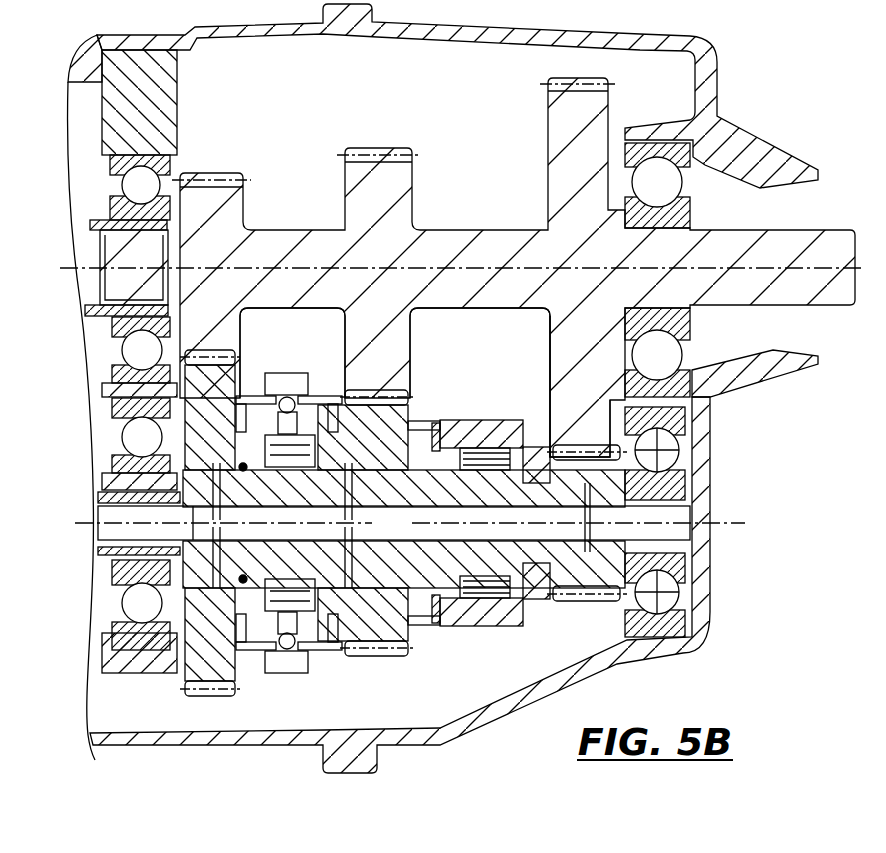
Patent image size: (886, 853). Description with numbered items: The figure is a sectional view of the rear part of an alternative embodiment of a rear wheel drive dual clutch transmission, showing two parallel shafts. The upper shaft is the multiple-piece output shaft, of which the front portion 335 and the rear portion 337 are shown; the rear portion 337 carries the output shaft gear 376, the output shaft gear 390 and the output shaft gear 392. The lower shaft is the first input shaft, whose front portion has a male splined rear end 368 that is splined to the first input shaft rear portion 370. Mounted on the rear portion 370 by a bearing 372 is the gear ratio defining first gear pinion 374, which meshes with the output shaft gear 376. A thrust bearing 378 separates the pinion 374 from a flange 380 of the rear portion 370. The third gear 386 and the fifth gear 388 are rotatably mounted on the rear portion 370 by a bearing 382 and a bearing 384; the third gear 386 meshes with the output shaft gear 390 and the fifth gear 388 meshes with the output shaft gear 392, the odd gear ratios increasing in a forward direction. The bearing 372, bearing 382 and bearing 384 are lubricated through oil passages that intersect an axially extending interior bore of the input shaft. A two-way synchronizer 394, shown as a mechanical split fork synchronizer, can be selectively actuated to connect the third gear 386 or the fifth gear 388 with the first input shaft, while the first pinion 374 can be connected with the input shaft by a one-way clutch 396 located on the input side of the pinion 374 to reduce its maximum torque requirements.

The front portion 335 is at (84, 232).
The rear portion 337 is at (282, 226).
The male splined rear end 368 is at (98, 556).
The first input shaft rear portion 370 is at (113, 489).
The bearing 372 is at (612, 486).
The first gear pinion 374 is at (615, 457).
The output shaft gear 376 is at (548, 350).
The thrust bearing 378 is at (434, 422).
The flange 380 is at (417, 425).
The bearing 382 is at (358, 555).
The bearing 384 is at (234, 468).
The third gear 386 is at (383, 437).
The fifth gear 388 is at (237, 378).
The output shaft gear 390 is at (412, 332).
The output shaft gear 392 is at (243, 332).
The two-way synchronizer 394 is at (293, 384).
The one-way clutch 396 is at (484, 450).